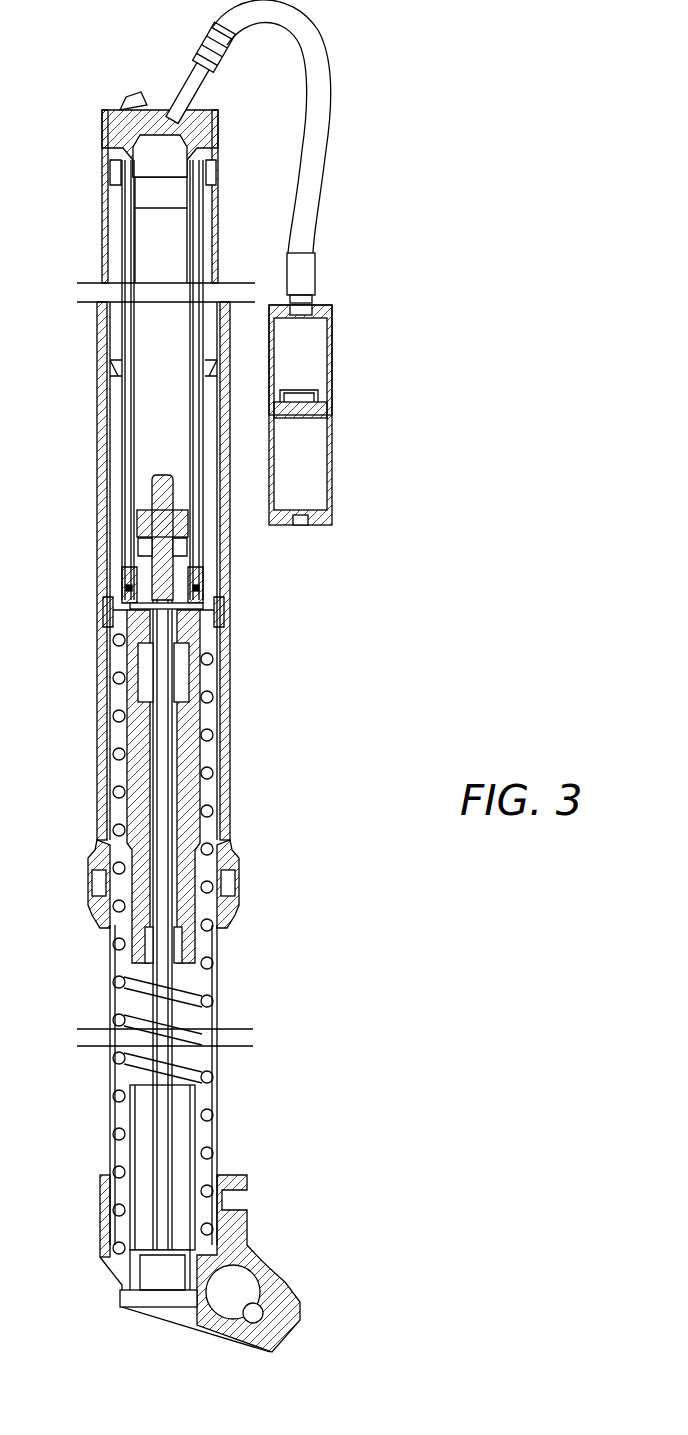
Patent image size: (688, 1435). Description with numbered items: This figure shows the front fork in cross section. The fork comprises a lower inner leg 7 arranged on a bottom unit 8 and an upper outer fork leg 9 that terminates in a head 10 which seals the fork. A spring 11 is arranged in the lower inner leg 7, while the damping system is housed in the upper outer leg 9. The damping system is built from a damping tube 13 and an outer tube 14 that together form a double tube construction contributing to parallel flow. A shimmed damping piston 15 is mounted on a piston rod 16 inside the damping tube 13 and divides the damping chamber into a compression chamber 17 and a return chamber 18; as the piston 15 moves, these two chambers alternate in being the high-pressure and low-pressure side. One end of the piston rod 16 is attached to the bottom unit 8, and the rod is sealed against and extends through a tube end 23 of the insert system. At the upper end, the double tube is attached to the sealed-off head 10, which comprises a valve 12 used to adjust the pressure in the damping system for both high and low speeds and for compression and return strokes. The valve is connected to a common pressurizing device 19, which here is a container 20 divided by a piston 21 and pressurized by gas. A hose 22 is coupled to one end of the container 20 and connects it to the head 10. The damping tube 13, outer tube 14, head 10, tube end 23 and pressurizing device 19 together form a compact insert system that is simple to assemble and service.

The lower inner leg 7 is at (207, 962).
The bottom unit 8 is at (245, 1236).
The upper outer fork leg 9 is at (228, 805).
The head 10 is at (210, 118).
The spring 11 is at (118, 752).
The valve 12 is at (118, 100).
The damping tube 13 is at (133, 452).
The outer tube 14 is at (198, 537).
The shimmed damping piston 15 is at (140, 515).
The piston rod 16 is at (163, 826).
The compression chamber 17 is at (176, 356).
The return chamber 18 is at (125, 570).
The pressurizing device 19 is at (333, 470).
The container 20 is at (333, 345).
The piston 21 is at (323, 407).
The hose 22 is at (325, 108).
The tube end 23 is at (110, 605).